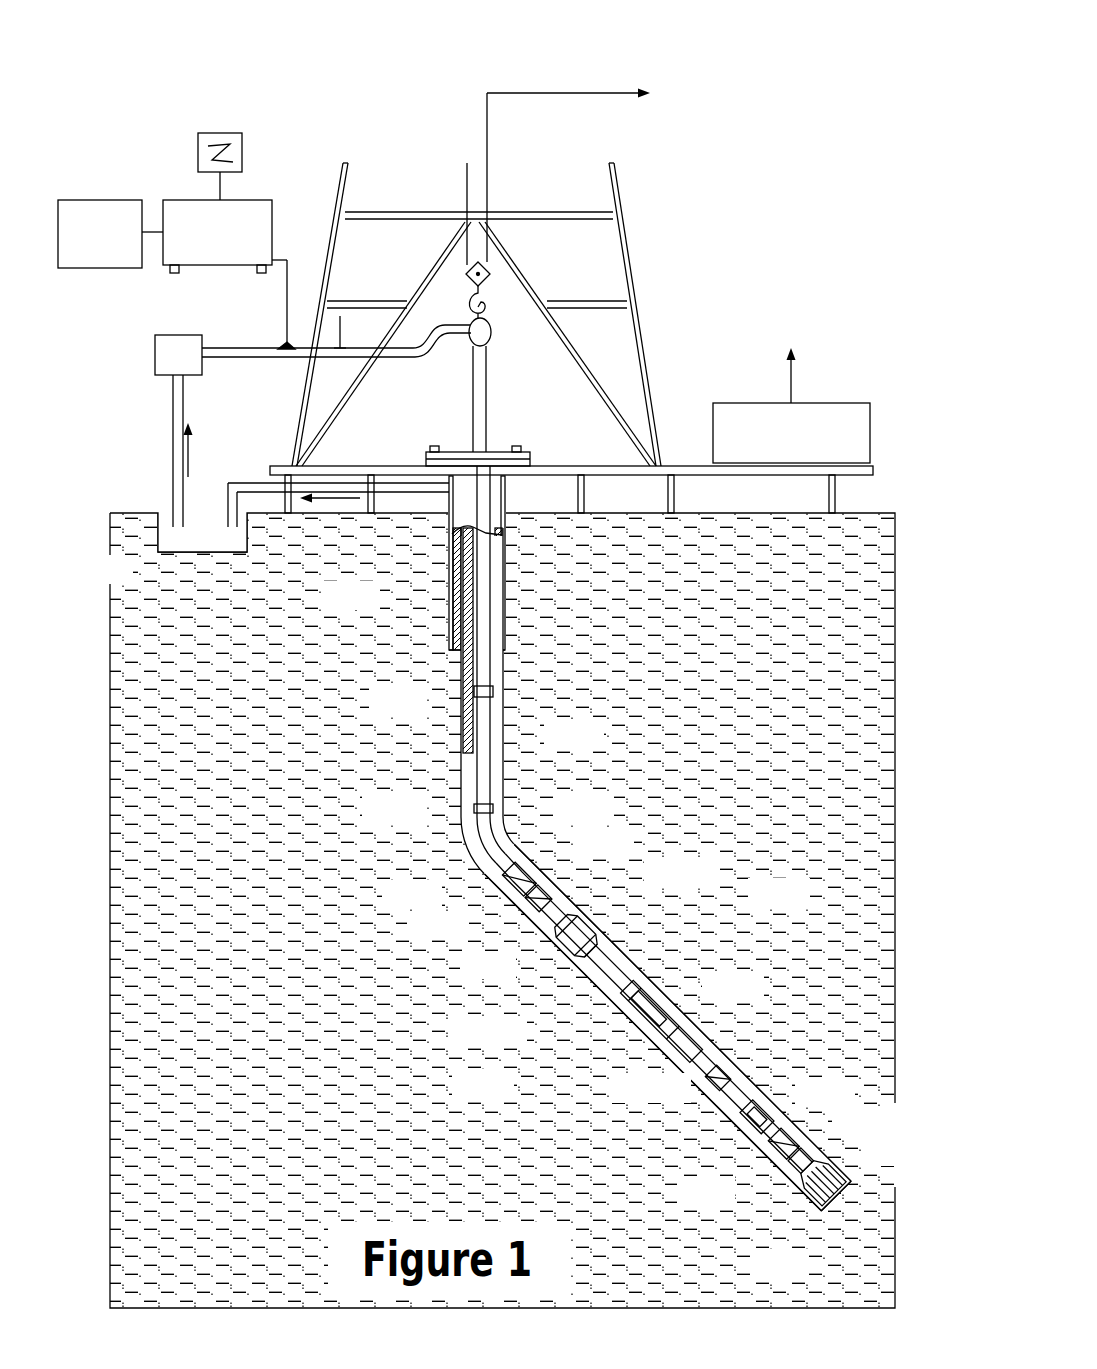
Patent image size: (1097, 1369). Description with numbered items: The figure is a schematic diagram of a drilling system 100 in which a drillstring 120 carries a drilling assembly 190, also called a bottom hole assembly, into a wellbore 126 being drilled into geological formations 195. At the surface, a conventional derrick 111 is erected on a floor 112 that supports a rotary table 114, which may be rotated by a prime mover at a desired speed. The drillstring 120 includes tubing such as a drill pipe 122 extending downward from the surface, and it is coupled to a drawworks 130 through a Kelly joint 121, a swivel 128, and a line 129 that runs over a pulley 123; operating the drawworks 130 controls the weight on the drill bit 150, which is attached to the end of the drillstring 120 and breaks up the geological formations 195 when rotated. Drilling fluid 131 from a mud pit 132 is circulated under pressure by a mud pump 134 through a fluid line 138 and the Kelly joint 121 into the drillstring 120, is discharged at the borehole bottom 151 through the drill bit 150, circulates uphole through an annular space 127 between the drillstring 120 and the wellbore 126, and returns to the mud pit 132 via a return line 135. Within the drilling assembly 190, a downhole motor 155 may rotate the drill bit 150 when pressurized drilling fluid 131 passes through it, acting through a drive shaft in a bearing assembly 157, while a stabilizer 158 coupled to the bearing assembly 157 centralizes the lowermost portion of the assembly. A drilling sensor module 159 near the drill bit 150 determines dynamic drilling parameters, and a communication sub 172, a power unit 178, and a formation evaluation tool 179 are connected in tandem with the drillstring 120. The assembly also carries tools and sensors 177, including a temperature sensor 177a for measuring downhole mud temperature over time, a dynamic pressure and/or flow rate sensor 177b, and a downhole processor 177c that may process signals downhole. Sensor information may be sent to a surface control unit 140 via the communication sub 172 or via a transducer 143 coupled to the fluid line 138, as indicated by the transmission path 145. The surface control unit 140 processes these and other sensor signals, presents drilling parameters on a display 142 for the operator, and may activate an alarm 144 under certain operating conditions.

The drilling system 100 is at (372, 101).
The derrick 111 is at (640, 315).
The floor 112 is at (686, 466).
The rotary table 114 is at (500, 449).
The drillstring 120 is at (492, 745).
The Kelly joint 121 is at (489, 408).
The drill pipe 122 is at (470, 718).
The pulley 123 is at (492, 285).
The wellbore 126 is at (505, 833).
The annular space 127 is at (518, 858).
The swivel 128 is at (470, 345).
The line 129 is at (490, 188).
The drawworks 130 is at (846, 403).
The drilling fluid 131 is at (167, 532).
The mud pit 132 is at (233, 553).
The mud pump 134 is at (155, 353).
The return line 135 is at (378, 523).
The fluid line 138 is at (290, 360).
The surface control unit 140 is at (186, 200).
The display 142 is at (234, 133).
The transducer 143 is at (282, 342).
The alarm 144 is at (122, 268).
The sensor information transmission 145 is at (275, 256).
The drill bit 150 is at (846, 1172).
The borehole bottom 151 is at (824, 1210).
The downhole motor 155 is at (682, 1022).
The bearing assembly 157 is at (803, 1125).
The stabilizer 158 is at (808, 1137).
The drilling sensor module 159 is at (810, 1171).
The communication sub 172 is at (461, 832).
The formation evaluation tools and sensors 177 is at (558, 948).
The temperature sensor 177a is at (590, 912).
The dynamic pressure and/or flow rate sensor 177b is at (564, 972).
The downhole processor 177c is at (579, 983).
The power unit 178 is at (492, 872).
The formation evaluation tool 179 is at (505, 893).
The drilling assembly 190 is at (712, 912).
The geological formations 195 is at (510, 1099).